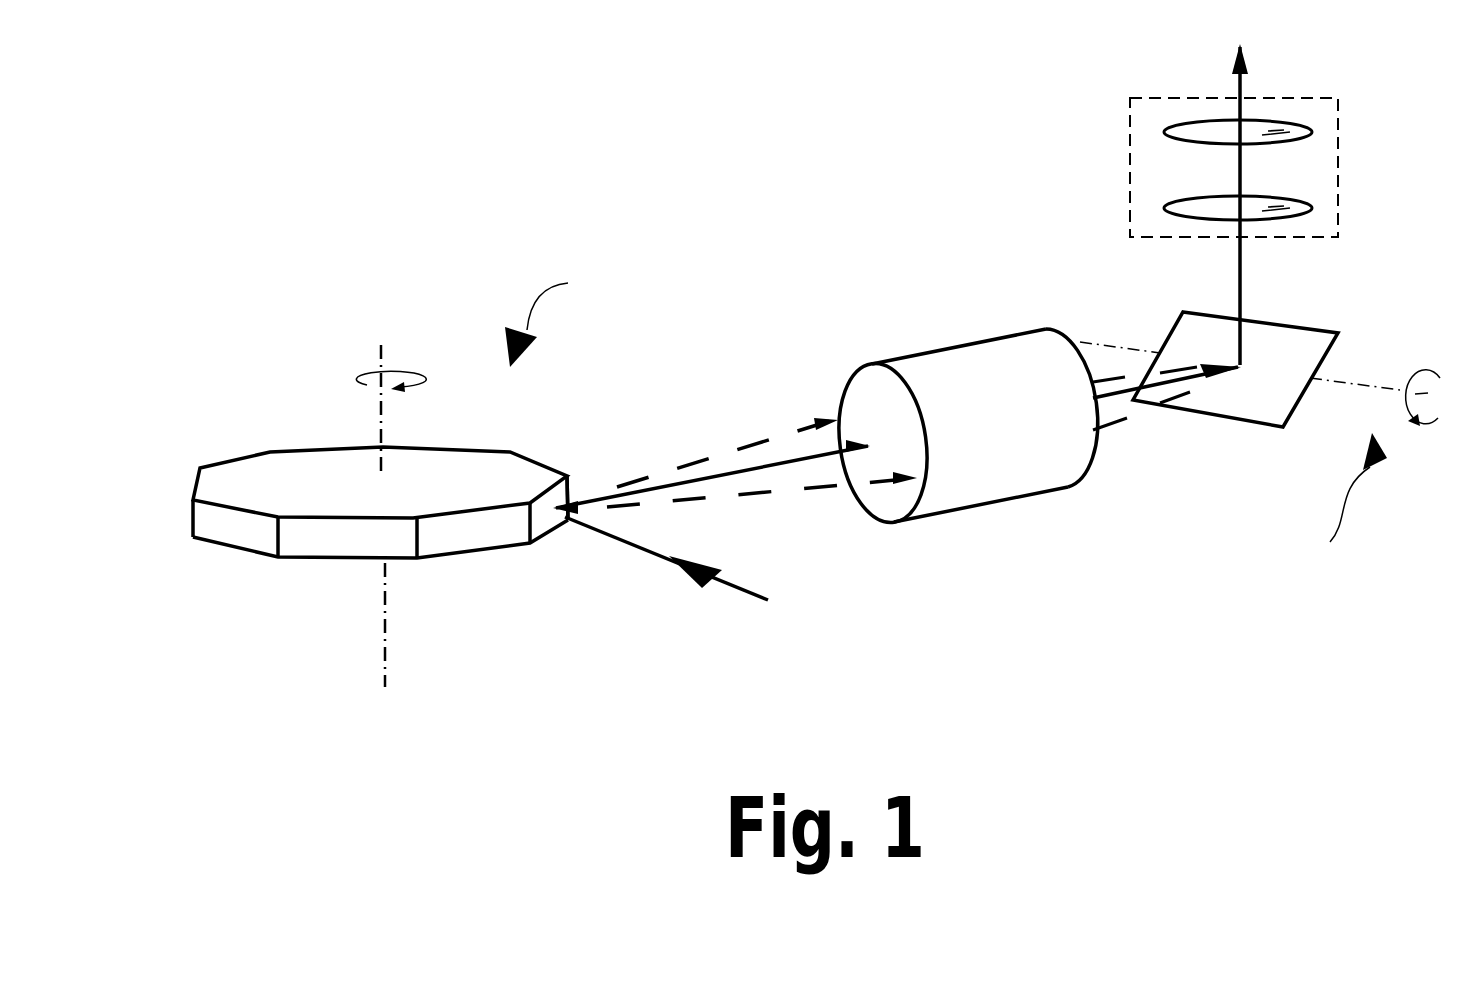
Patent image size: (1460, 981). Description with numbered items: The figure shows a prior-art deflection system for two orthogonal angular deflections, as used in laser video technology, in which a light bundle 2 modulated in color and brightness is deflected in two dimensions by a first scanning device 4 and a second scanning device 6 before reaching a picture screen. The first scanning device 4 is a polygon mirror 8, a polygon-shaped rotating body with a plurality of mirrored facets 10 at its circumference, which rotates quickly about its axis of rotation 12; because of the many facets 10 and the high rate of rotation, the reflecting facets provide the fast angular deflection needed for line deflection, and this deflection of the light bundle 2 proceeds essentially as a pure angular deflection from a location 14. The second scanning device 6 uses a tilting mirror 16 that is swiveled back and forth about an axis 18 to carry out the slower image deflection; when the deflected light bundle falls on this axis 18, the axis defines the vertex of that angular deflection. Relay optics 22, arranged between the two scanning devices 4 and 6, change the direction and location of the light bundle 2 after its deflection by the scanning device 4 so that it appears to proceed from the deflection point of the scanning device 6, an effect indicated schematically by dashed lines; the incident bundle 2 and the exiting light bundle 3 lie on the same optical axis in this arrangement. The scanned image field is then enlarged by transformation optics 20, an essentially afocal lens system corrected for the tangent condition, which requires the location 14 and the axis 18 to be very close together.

The light bundle 2 is at (627, 543).
The exiting light bundle 3 is at (1167, 387).
The first scanning device 4 is at (555, 305).
The second scanning device 6 is at (1355, 520).
The polygon mirror 8 is at (417, 468).
The mirrored facets 10 is at (230, 527).
The axis of rotation 12 is at (370, 417).
The location of angular deflection 14 is at (573, 482).
The tilting mirror 16 is at (1242, 385).
The axis 18 is at (1380, 387).
The transformation optics 20 is at (1145, 163).
The relay optics 22 is at (1000, 465).